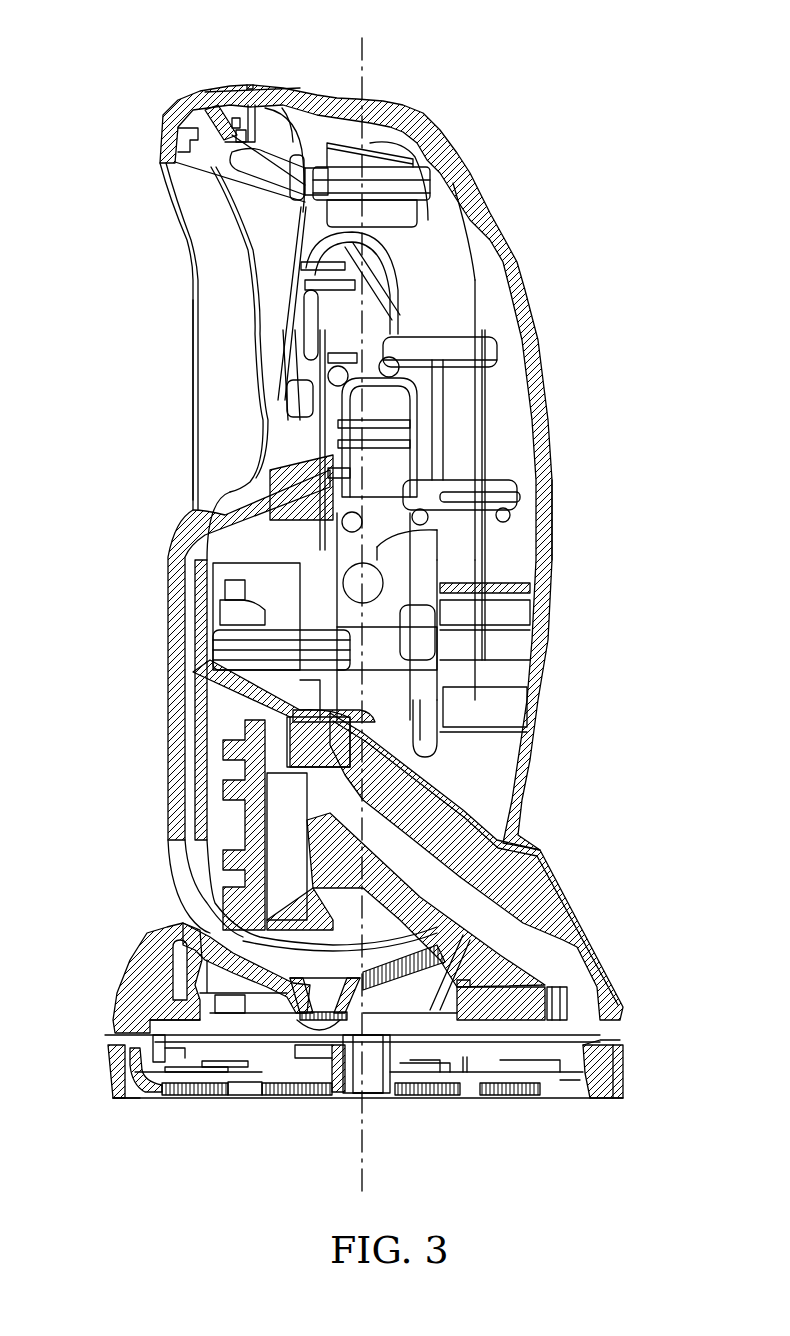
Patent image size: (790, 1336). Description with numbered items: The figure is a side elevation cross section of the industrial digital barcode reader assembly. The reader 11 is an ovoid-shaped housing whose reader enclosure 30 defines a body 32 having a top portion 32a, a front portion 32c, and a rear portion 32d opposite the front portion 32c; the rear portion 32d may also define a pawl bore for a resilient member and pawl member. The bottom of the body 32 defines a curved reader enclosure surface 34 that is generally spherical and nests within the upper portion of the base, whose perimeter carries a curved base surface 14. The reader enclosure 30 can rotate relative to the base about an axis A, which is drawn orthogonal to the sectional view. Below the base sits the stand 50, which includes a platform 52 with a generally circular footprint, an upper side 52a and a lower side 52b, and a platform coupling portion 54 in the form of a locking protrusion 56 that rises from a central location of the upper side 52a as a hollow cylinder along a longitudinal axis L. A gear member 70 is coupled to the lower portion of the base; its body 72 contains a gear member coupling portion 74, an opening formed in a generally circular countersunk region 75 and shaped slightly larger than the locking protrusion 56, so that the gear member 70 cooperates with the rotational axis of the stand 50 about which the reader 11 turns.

The longitudinal axis L is at (367, 50).
The reader enclosure 30 is at (527, 313).
The body 32 is at (493, 190).
The top portion 32a is at (278, 72).
The front portion 32c is at (163, 335).
The rear portion 32d is at (566, 428).
The reader 11 is at (153, 648).
The axis A is at (363, 743).
The curved reader enclosure surface 34 is at (200, 935).
The curved base surface 14 is at (140, 955).
The body 72 is at (523, 1057).
The platform 52 is at (613, 1093).
The upper side 52a is at (560, 1090).
The lower side 52b is at (138, 1102).
The stand 50 is at (618, 1060).
The locking protrusion 56 is at (340, 1080).
The platform coupling portion 54 is at (392, 1105).
The gear member coupling portion 74 is at (326, 1064).
The countersunk region 75 is at (421, 1077).
The gear member 70 is at (473, 1080).